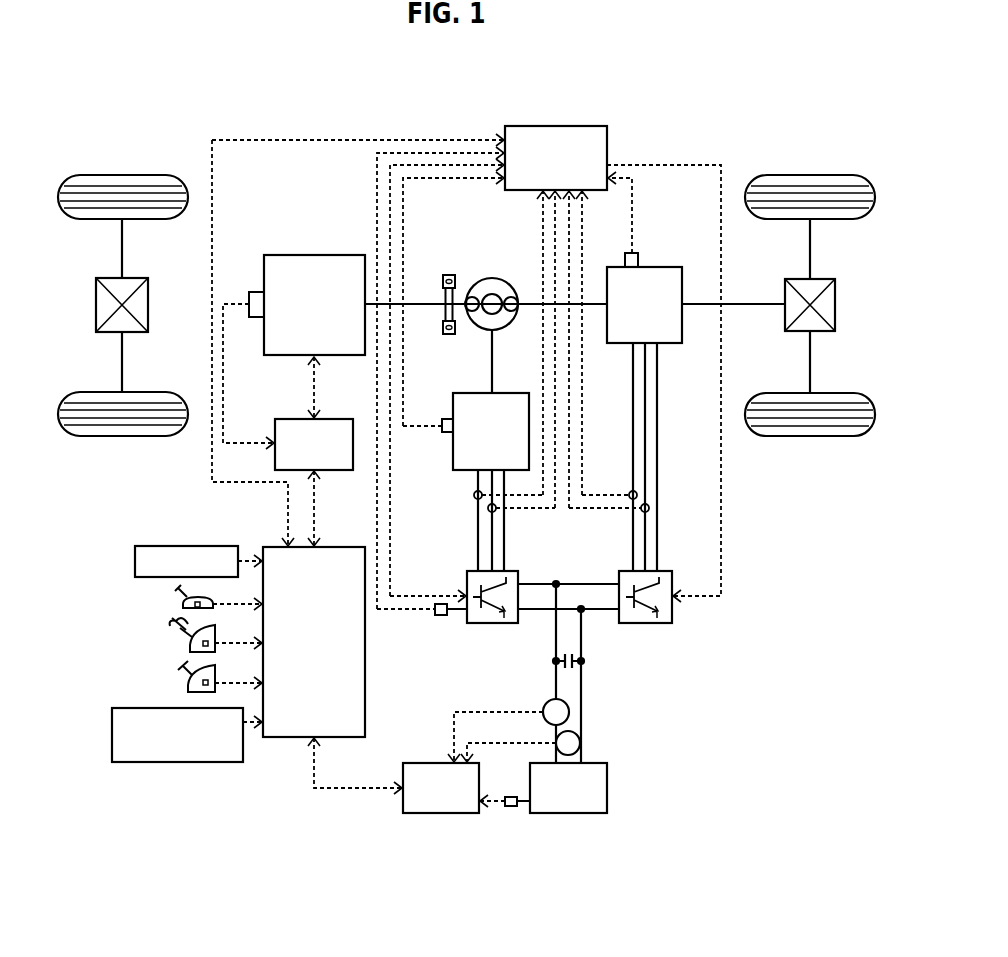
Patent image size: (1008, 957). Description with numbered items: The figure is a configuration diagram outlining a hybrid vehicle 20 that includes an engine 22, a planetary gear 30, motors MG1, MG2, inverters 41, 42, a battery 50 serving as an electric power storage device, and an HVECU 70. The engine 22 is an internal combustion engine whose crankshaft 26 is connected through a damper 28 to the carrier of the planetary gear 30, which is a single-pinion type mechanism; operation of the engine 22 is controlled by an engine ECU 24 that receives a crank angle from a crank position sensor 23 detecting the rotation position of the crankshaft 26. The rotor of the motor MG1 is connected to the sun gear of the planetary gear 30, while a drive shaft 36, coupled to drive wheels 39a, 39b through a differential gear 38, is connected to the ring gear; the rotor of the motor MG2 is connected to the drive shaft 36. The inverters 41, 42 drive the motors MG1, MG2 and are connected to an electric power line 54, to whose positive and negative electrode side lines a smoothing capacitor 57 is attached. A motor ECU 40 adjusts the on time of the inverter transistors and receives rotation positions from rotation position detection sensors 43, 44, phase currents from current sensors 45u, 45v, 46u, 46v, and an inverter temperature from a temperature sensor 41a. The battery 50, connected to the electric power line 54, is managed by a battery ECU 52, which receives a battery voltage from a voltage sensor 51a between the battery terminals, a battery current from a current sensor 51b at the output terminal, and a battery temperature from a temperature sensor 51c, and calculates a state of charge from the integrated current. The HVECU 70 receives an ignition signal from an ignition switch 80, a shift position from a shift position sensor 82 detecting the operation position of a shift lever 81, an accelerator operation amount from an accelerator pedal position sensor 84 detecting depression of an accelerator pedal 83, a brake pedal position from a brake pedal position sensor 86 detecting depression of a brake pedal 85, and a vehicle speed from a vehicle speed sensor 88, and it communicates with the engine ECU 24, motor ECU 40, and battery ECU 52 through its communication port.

The hybrid vehicle 20 is at (682, 88).
The engine 22 is at (314, 255).
The crank position sensor 23 is at (255, 292).
The engine ECU 24 is at (338, 419).
The crankshaft 26 is at (422, 303).
The damper 28 is at (447, 275).
The planetary gear 30 is at (490, 278).
The drive shaft 36 is at (760, 303).
The differential gear 38 is at (822, 279).
The drive wheel 39a is at (810, 175).
The drive wheel 39b is at (810, 436).
The motor ECU 40 is at (557, 125).
The inverter 41 is at (513, 571).
The temperature sensor 41a is at (441, 616).
The inverter 42 is at (668, 571).
The rotation position detection sensor 43 is at (448, 433).
The rotation position detection sensor 44 is at (637, 253).
The current sensor 45u is at (474, 495).
The current sensor 45v is at (488, 508).
The current sensor 46u is at (637, 495).
The current sensor 46v is at (649, 508).
The battery 50 is at (607, 787).
The voltage sensor 51a is at (581, 742).
The current sensor 51b is at (569, 710).
The temperature sensor 51c is at (512, 806).
The battery ECU 52 is at (429, 763).
The electric power line 54 is at (581, 632).
The smoothing capacitor 57 is at (582, 656).
The HVECU 70 is at (340, 547).
The ignition switch 80 is at (135, 558).
The shift lever 81 is at (180, 596).
The shift position sensor 82 is at (185, 605).
The accelerator pedal 83 is at (180, 635).
The accelerator pedal position sensor 84 is at (193, 646).
The brake pedal 85 is at (185, 672).
The brake pedal position sensor 86 is at (192, 686).
The vehicle speed sensor 88 is at (112, 720).
The motor MG1 is at (467, 393).
The motor MG2 is at (675, 266).